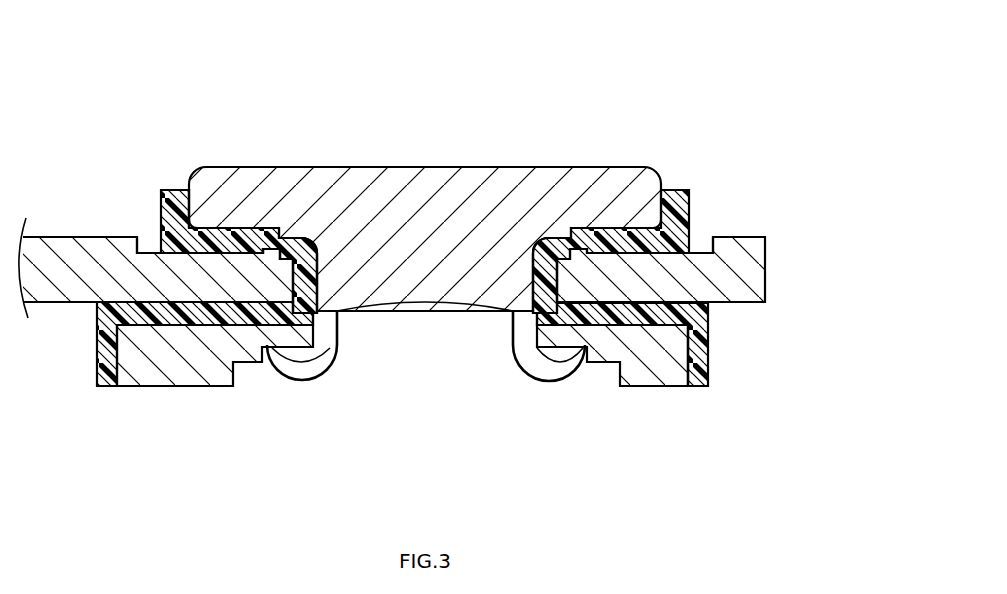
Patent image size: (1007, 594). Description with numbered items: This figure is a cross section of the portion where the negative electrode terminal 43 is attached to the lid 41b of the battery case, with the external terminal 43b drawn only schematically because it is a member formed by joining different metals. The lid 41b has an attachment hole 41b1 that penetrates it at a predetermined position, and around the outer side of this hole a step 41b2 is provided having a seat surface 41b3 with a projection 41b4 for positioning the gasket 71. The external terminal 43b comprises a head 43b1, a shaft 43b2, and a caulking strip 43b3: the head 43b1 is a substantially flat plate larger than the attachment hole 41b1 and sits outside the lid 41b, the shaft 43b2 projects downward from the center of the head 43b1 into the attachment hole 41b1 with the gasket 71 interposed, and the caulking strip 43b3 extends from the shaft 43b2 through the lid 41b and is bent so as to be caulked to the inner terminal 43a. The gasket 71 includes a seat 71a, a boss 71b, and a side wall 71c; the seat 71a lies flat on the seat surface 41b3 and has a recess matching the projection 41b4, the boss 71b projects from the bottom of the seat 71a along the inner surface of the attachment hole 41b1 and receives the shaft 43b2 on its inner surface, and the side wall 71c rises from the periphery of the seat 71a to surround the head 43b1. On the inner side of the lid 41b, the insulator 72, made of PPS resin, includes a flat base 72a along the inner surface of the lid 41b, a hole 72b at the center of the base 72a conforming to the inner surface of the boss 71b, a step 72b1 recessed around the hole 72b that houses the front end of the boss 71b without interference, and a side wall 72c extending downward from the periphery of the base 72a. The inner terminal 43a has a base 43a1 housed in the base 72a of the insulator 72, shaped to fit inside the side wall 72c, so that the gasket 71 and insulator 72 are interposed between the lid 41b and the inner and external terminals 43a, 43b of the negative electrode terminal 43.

The negative electrode terminal 43 is at (600, 80).
The inner terminal 43a is at (212, 402).
The base 43a1 is at (158, 387).
The external terminal 43b is at (644, 169).
The head 43b1 is at (497, 166).
The shaft 43b2 is at (575, 290).
The caulking strip 43b3 is at (296, 381).
The lid 41b is at (78, 213).
The attachment hole 41b1 is at (317, 265).
The step 41b2 is at (150, 250).
The seat surface 41b3 is at (693, 213).
The projection 41b4 is at (272, 243).
The gasket 71 is at (699, 190).
The seat 71a is at (225, 232).
The boss 71b is at (533, 277).
The side wall 71c is at (205, 203).
The insulator 72 is at (717, 339).
The base 72a is at (637, 326).
The hole 72b is at (516, 334).
The step 72b1 is at (332, 300).
The side wall 72c is at (690, 368).